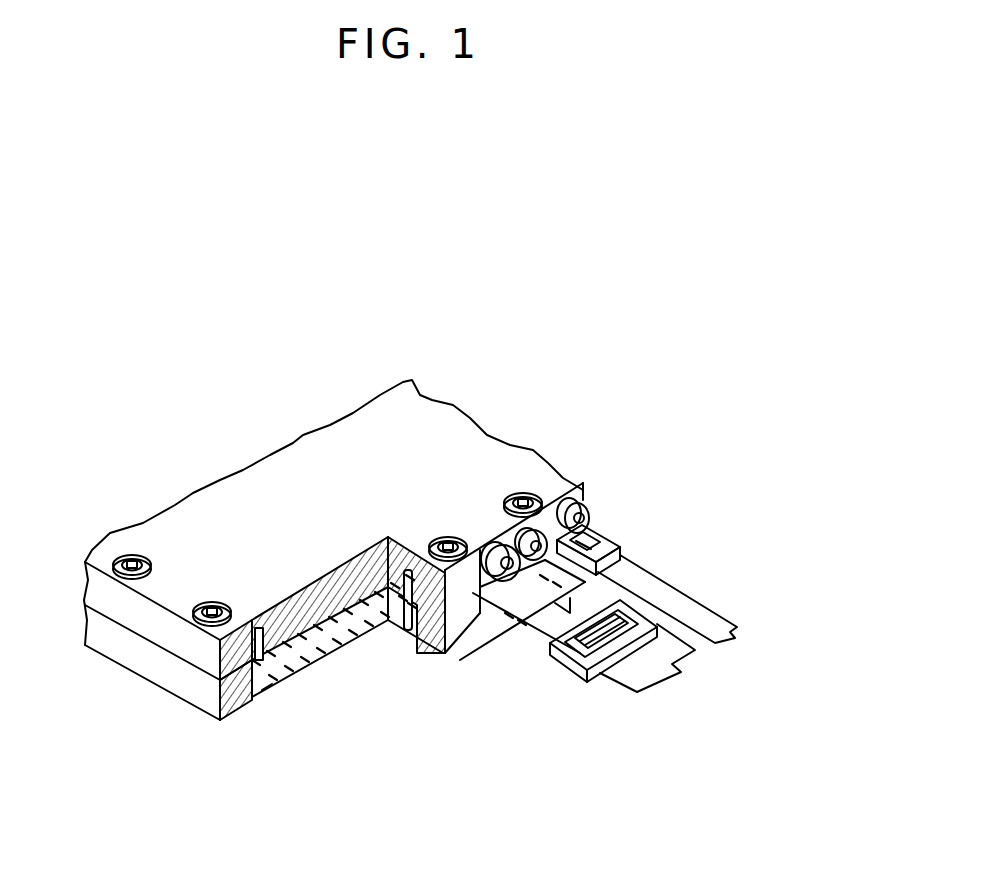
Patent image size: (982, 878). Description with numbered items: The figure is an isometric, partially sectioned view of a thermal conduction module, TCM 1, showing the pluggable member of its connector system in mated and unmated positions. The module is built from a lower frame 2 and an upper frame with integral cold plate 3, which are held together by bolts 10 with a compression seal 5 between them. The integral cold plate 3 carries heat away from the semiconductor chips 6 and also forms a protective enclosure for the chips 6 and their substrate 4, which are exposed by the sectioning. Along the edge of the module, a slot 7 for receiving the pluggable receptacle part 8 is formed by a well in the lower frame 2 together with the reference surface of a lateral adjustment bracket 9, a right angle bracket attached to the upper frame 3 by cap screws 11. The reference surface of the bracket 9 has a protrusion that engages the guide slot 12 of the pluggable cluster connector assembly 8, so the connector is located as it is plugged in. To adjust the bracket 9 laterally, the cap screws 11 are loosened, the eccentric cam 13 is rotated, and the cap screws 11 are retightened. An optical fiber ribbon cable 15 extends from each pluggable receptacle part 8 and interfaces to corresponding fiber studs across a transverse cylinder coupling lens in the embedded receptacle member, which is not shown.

The TCM 1 is at (480, 404).
The lower frame 2 is at (187, 678).
The upper frame with integral cold plate 3 is at (163, 627).
The substrate 4 is at (275, 683).
The compression seal 5 is at (255, 628).
The semiconductor chips 6 is at (357, 613).
The slot 7 is at (485, 590).
The pluggable receptacle part 8 is at (620, 552).
The lateral adjustment bracket 9 is at (570, 500).
The bolts 10 is at (206, 605).
The cap screws 11 is at (563, 533).
The guide slot 12 is at (560, 612).
The eccentric cam 13 is at (520, 565).
The optical fiber ribbon cable 15 is at (690, 664).